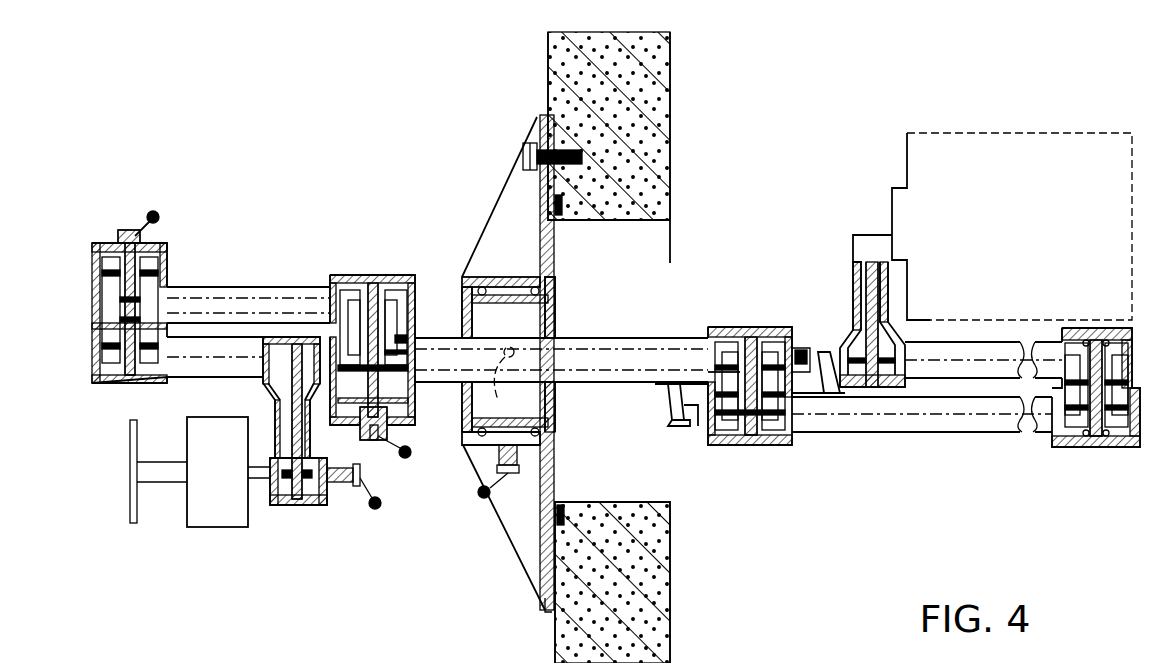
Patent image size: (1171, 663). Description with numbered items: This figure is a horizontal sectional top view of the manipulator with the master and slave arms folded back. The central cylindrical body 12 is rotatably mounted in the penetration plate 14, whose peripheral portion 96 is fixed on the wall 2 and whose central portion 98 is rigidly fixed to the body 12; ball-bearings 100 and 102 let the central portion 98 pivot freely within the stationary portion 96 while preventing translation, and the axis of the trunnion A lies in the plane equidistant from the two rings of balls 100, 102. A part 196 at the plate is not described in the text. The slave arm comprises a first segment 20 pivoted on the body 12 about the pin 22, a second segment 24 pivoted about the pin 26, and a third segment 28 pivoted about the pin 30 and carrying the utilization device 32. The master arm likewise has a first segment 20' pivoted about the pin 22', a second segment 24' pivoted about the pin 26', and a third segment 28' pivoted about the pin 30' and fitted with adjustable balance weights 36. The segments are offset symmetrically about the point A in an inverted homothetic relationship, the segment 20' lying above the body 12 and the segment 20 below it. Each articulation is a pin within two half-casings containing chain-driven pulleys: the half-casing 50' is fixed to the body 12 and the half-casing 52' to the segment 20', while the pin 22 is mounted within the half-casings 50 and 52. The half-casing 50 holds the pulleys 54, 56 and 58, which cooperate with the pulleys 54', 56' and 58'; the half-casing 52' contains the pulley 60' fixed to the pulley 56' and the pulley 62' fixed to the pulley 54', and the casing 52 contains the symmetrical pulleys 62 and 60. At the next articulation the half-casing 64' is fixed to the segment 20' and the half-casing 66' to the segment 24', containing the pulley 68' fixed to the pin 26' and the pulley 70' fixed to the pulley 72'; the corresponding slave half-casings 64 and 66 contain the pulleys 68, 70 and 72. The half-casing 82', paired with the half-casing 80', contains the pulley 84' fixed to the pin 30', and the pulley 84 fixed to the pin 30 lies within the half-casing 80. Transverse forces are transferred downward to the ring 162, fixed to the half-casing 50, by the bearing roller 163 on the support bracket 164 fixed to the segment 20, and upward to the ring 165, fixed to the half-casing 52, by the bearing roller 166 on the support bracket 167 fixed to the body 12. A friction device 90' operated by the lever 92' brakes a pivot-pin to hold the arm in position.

The wall 2 is at (640, 605).
The central cylindrical body 12 is at (620, 338).
The penetration plate 14 is at (500, 535).
The first segment 20 is at (922, 439).
The first segment 20' is at (248, 279).
The pin 22 is at (750, 427).
The pin 22' is at (363, 309).
The second segment 24 is at (983, 330).
The second segment 24' is at (195, 374).
The pin 26 is at (1104, 432).
The pin 26' is at (170, 293).
The third segment 28 is at (891, 226).
The third segment 28' is at (277, 509).
The pin 30 is at (857, 295).
The pin 30' is at (262, 420).
The utilization device 32 is at (975, 132).
The adjustable balance weights 36 is at (190, 527).
The half-casing 50 is at (791, 344).
The half-casing 50' is at (396, 493).
The half-casing 52 is at (774, 416).
The half-casing 52' is at (323, 300).
The pulley 54 is at (745, 341).
The pulley 54' is at (422, 327).
The pulley 56 is at (706, 327).
The pulley 56' is at (399, 393).
The pulley 58 is at (653, 396).
The pulley 58' is at (349, 428).
The pulley 60 is at (788, 446).
The pulley 60' is at (404, 305).
The pulley 62 is at (735, 450).
The pulley 62' is at (422, 327).
The half-casing 64 is at (1087, 426).
The half-casing 64' is at (105, 278).
The half-casing 66 is at (1067, 358).
The half-casing 66' is at (109, 421).
The pulley 68 is at (1054, 431).
The pulley 68' is at (82, 300).
The pulley 70 is at (1121, 432).
The pulley 70' is at (105, 313).
The pulley 72 is at (1112, 358).
The pulley 72' is at (102, 326).
The half-casing 80 is at (909, 309).
The half-casing 80' is at (252, 421).
The half-casing 82' is at (349, 510).
The pulley 84 is at (900, 323).
The pulley 84' is at (262, 395).
The friction device 90' is at (414, 446).
The operating lever 92' is at (478, 477).
The peripheral portion 96 is at (547, 605).
The central portion 98 is at (555, 310).
The ball-bearing 100 is at (540, 285).
The ball-bearing 102 is at (482, 277).
The ring 162 is at (800, 395).
The bearing roller 163 is at (803, 350).
The gusset 164 is at (838, 380).
The ring 165 is at (695, 425).
The bearing roller 166 is at (672, 425).
The support bracket 167 is at (670, 395).
The bolt 196 is at (568, 152).
The point A is at (507, 382).